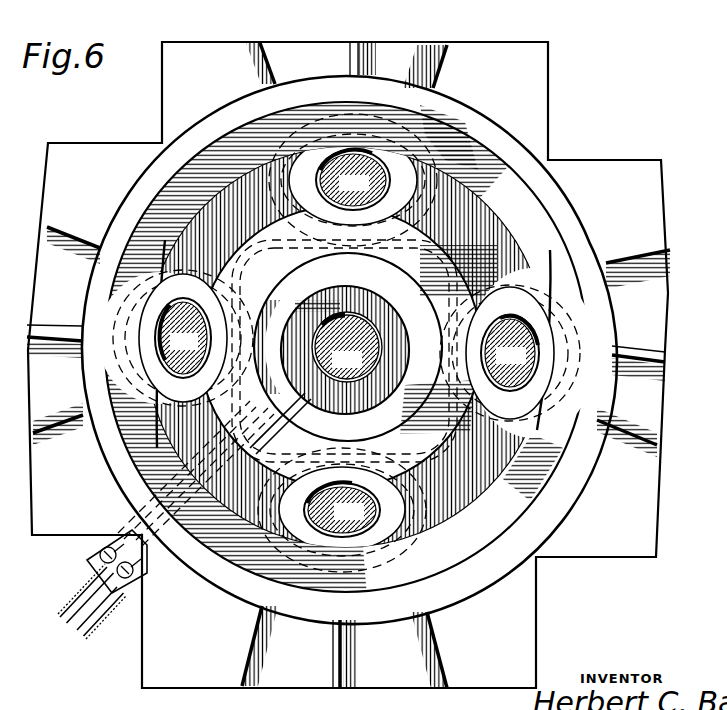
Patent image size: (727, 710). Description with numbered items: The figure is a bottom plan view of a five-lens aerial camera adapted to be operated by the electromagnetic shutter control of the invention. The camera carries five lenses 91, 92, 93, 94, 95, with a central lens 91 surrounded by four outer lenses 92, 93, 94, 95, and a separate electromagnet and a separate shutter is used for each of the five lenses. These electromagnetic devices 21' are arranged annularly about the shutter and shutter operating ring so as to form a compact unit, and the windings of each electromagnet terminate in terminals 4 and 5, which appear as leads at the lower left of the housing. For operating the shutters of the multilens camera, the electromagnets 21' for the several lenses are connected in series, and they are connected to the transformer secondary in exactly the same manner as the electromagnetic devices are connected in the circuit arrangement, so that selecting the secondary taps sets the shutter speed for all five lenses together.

The electromagnetic devices 21' is at (327, 294).
The terminal 4 is at (65, 595).
The terminal 5 is at (100, 612).
The lens 91 is at (346, 353).
The lens 92 is at (183, 338).
The lens 93 is at (353, 180).
The lens 94 is at (510, 353).
The lens 95 is at (342, 509).